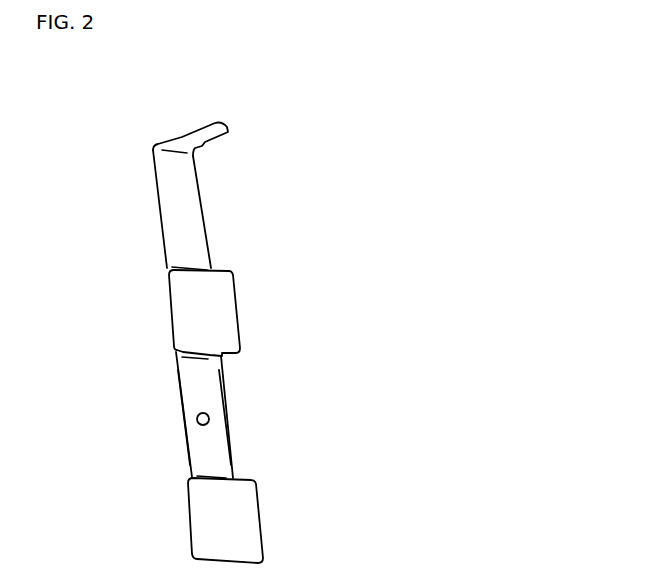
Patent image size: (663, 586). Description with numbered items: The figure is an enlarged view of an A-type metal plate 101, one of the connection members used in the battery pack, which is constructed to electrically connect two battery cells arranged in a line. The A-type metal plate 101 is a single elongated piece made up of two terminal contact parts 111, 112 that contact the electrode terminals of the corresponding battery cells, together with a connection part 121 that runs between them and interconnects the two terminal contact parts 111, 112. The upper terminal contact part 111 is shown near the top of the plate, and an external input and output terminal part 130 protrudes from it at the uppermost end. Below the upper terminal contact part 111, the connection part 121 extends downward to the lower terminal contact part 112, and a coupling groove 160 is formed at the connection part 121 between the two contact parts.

The A-type metal plate 101 is at (270, 152).
The external input and output terminal part 130 is at (181, 137).
The terminal contact part 111 is at (169, 317).
The connection part 121 is at (182, 420).
The coupling groove 160 is at (209, 419).
The terminal contact part 112 is at (189, 502).